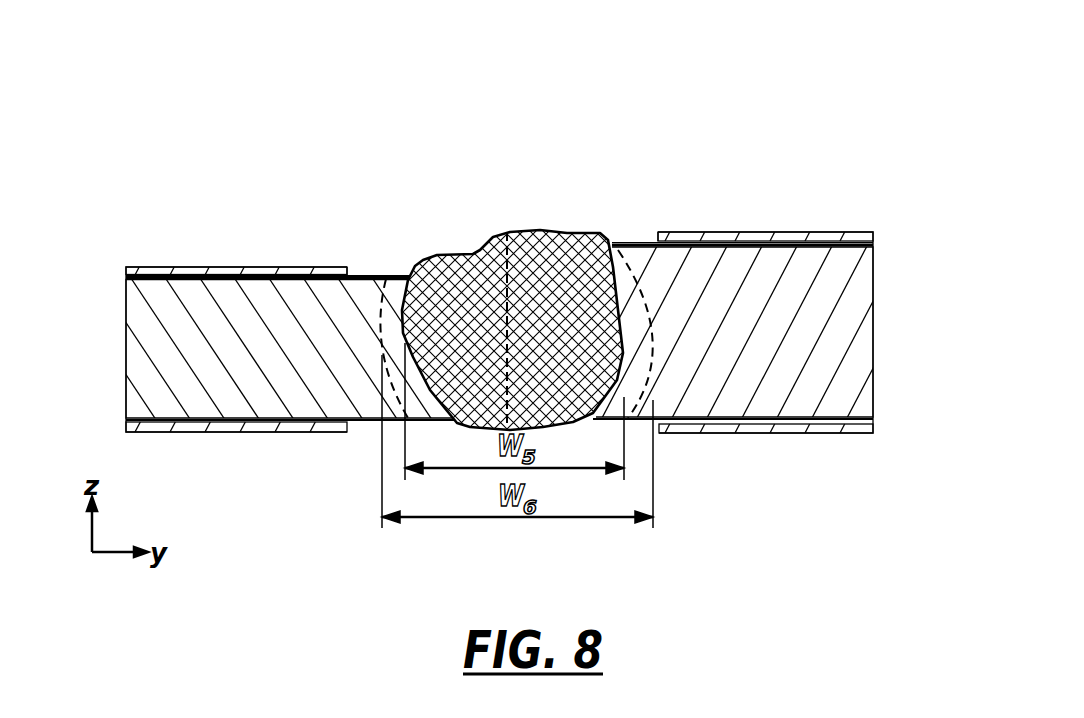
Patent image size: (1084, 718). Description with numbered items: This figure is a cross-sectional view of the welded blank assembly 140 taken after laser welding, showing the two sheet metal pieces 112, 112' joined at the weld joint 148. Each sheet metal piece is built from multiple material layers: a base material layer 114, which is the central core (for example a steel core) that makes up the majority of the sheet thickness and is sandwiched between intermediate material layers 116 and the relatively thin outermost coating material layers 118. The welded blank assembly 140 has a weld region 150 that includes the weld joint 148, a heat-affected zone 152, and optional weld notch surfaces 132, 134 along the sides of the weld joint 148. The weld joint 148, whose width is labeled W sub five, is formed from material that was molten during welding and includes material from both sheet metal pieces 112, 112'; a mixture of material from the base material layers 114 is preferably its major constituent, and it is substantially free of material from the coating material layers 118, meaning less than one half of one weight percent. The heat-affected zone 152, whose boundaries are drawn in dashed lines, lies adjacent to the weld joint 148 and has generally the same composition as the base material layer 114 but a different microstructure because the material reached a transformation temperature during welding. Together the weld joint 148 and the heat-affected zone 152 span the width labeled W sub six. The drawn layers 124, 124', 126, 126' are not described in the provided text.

The sheet metal piece 112 is at (765, 288).
The sheet metal piece 112' is at (236, 305).
The base material layer 114 is at (133, 343).
The intermediate material layer 116 is at (126, 278).
The coating material layer 118 is at (127, 270).
The top layer 124 is at (765, 203).
The top layer 124' is at (236, 236).
The bottom layer 126 is at (766, 451).
The bottom layer 126' is at (236, 450).
The weld notch surface 132 is at (348, 268).
The weld notch surface 134 is at (370, 280).
The welded blank assembly 140 is at (830, 95).
The weld joint 148 is at (578, 314).
The weld region 150 is at (587, 200).
The heat-affected zone 152 is at (392, 307).